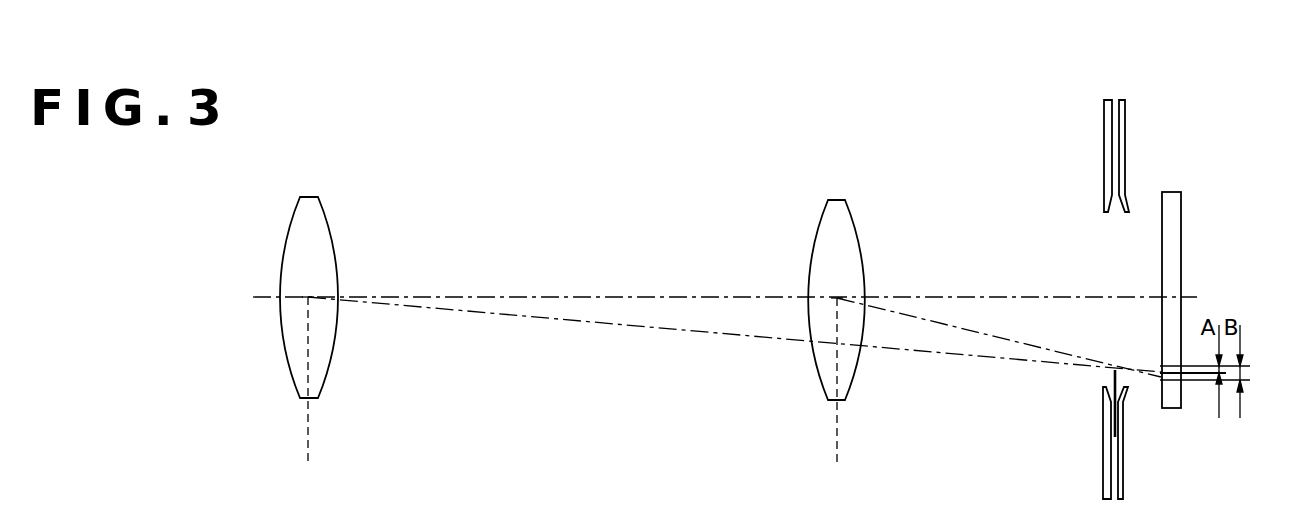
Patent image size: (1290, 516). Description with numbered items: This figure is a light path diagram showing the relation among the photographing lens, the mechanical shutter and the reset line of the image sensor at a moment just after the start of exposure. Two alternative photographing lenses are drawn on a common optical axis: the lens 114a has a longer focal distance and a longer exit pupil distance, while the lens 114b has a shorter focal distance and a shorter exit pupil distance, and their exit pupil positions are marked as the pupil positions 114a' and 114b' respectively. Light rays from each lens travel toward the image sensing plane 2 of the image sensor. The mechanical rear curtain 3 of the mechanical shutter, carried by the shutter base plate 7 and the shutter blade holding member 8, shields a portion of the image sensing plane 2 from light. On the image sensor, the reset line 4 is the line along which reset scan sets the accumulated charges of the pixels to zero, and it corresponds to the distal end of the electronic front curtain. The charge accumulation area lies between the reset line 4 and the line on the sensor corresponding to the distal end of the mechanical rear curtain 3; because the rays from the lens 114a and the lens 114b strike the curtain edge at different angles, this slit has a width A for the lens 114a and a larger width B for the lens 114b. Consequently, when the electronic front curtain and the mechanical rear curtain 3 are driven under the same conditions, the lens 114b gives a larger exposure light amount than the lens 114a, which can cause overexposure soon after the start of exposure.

The lens 114a is at (308, 272).
The exit pupil position of lens 114a 114a' is at (307, 397).
The lens 114b is at (836, 273).
The exit pupil position of lens 114b 114b' is at (837, 398).
The image sensing plane 2 is at (1169, 191).
The mechanical rear curtain 3 is at (1113, 372).
The reset line 4 is at (1160, 364).
The shutter base plate 7 is at (1103, 492).
The shutter blade holding member 8 is at (1123, 492).